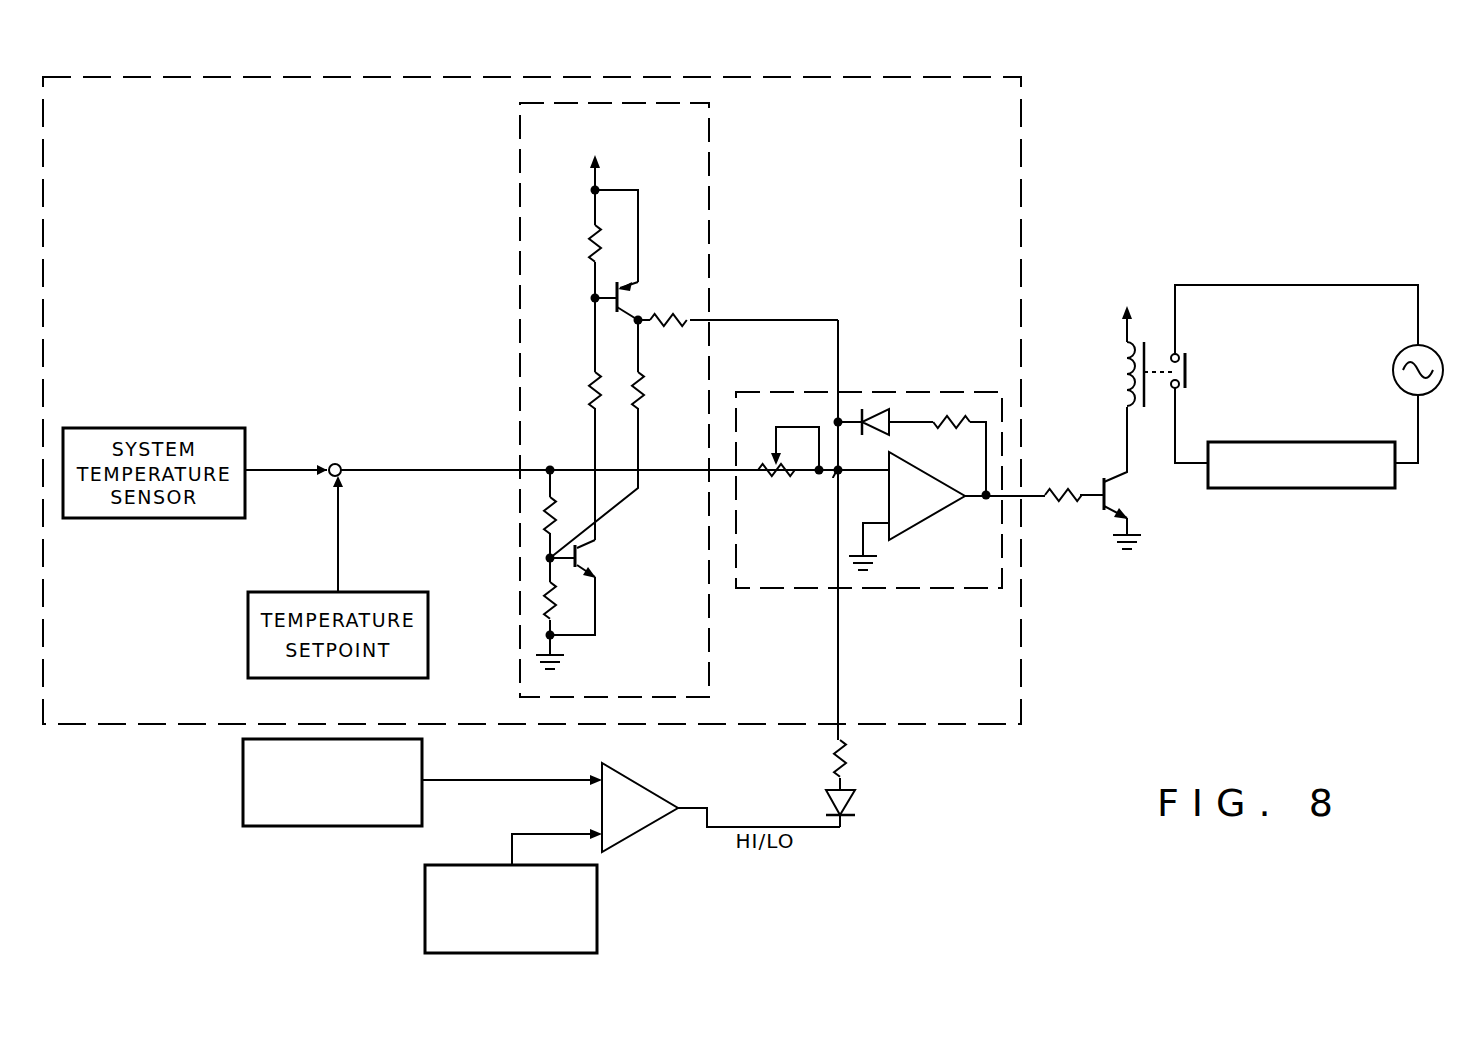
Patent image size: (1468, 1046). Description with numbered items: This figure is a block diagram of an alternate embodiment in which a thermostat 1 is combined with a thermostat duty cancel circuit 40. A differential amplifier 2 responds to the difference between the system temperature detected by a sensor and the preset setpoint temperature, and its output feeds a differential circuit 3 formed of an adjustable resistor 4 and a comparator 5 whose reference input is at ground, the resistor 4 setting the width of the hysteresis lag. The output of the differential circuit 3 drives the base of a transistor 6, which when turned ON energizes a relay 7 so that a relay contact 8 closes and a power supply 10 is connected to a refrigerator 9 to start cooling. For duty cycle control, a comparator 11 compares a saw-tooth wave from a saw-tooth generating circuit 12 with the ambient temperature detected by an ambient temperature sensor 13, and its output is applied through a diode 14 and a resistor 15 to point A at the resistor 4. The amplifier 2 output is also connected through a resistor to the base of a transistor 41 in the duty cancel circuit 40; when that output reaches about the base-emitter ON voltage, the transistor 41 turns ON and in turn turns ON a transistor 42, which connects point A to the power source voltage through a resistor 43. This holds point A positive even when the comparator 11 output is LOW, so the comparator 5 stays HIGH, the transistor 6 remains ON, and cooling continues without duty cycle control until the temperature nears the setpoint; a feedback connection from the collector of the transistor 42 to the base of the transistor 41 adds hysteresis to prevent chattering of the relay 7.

The thermostat 1 is at (162, 77).
The differential amplifier 2 is at (339, 464).
The differential circuit 3 is at (909, 392).
The adjustable resistor 4 is at (777, 480).
The comparator 5 is at (931, 513).
The transistor 6 is at (1118, 497).
The relay 7 is at (1148, 396).
The relay contact 8 is at (1187, 366).
The refrigerator 9 is at (1360, 488).
The power supply 10 is at (1429, 349).
The comparator 11 is at (649, 828).
The saw-tooth generating circuit 12 is at (599, 939).
The ambient temperature sensor 13 is at (340, 827).
The diode 14 is at (855, 801).
The resistor 15 is at (849, 756).
The thermostat duty cancel circuit 40 is at (709, 194).
The transistor 41 is at (592, 559).
The transistor 42 is at (636, 300).
The resistor 43 is at (661, 327).